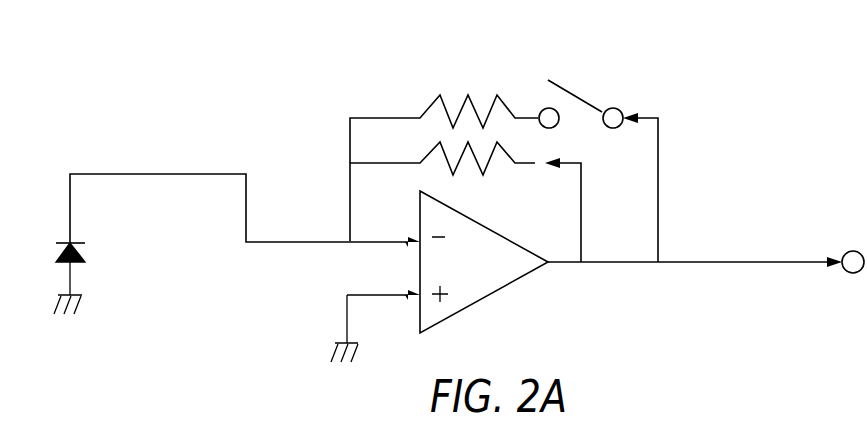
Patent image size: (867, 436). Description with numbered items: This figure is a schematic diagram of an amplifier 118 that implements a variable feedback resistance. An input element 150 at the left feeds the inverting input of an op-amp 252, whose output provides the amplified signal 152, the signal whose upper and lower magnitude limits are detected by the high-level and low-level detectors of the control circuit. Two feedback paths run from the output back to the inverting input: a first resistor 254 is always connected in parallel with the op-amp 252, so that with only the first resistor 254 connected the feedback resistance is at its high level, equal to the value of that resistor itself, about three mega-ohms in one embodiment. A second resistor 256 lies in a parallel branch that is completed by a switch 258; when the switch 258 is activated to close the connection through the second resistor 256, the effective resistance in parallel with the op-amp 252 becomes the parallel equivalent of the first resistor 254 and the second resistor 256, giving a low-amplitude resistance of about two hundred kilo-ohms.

The amplifier 118 is at (768, 92).
The photodiode 150 is at (185, 174).
The amplified signal 152 is at (803, 263).
The op-amp 252 is at (473, 305).
The R1 254 is at (497, 165).
The R2 256 is at (450, 93).
The switch 258 is at (647, 82).